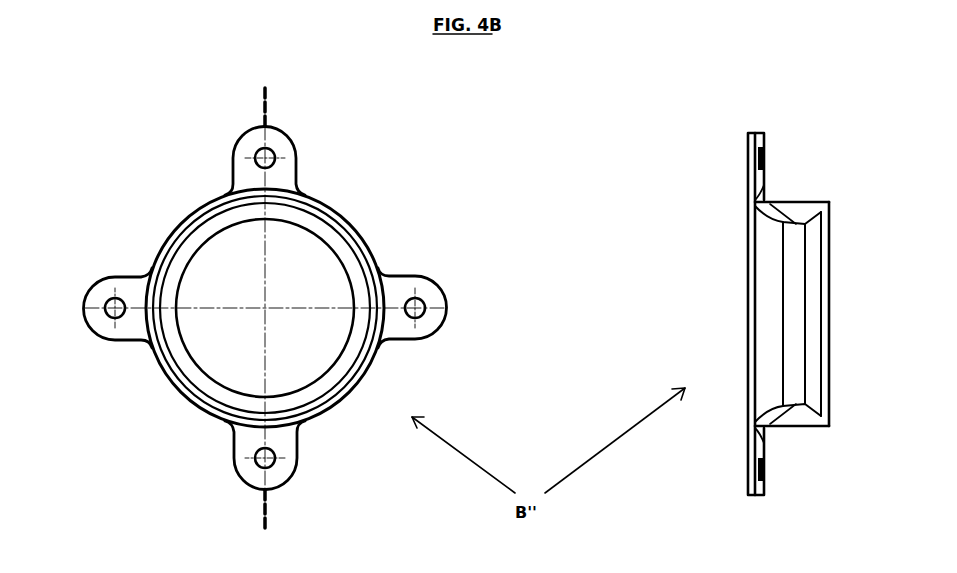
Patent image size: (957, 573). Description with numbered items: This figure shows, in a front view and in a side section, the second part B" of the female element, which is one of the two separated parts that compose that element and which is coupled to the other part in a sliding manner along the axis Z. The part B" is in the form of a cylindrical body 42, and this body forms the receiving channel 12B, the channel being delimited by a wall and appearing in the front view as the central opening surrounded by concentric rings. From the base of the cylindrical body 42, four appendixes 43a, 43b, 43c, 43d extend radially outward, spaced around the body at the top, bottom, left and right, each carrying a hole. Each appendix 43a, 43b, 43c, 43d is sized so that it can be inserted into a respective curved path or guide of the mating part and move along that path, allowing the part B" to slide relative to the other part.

The receiving channel 12B is at (837, 318).
The cylindrical body 42 is at (800, 427).
The appendix 43a is at (127, 288).
The appendix 43b is at (292, 462).
The appendix 43c is at (292, 167).
The appendix 43d is at (433, 287).